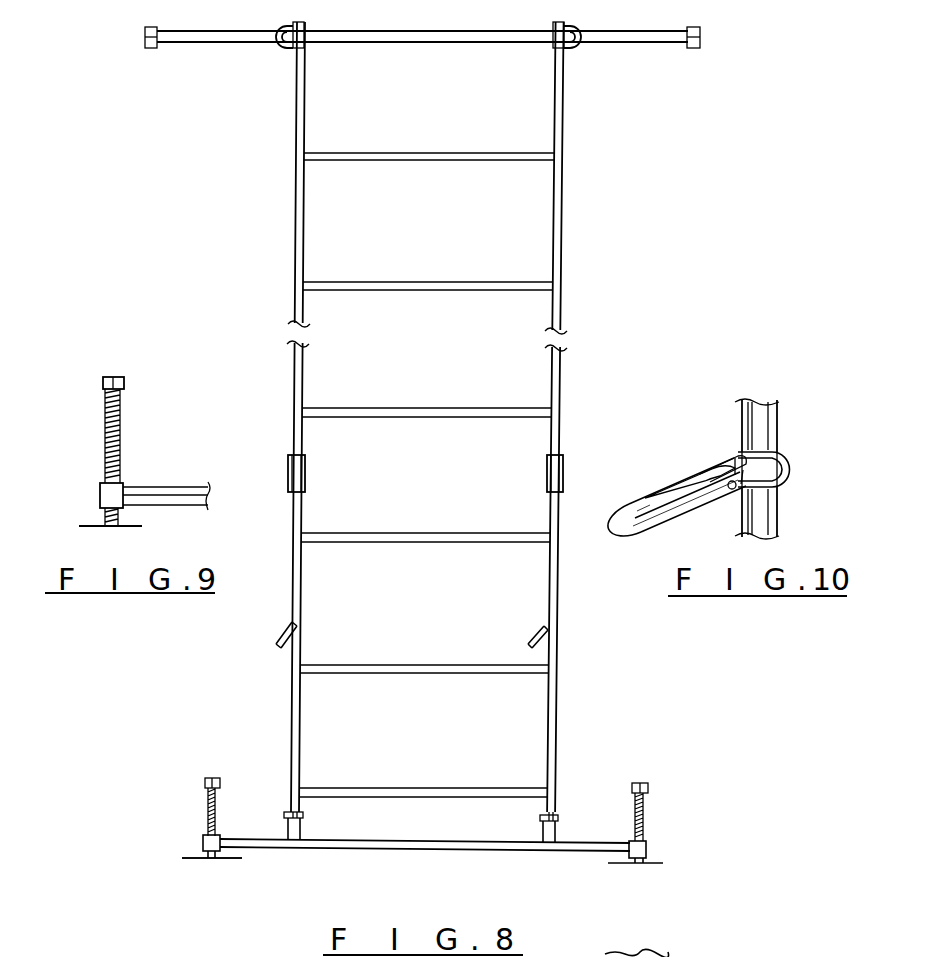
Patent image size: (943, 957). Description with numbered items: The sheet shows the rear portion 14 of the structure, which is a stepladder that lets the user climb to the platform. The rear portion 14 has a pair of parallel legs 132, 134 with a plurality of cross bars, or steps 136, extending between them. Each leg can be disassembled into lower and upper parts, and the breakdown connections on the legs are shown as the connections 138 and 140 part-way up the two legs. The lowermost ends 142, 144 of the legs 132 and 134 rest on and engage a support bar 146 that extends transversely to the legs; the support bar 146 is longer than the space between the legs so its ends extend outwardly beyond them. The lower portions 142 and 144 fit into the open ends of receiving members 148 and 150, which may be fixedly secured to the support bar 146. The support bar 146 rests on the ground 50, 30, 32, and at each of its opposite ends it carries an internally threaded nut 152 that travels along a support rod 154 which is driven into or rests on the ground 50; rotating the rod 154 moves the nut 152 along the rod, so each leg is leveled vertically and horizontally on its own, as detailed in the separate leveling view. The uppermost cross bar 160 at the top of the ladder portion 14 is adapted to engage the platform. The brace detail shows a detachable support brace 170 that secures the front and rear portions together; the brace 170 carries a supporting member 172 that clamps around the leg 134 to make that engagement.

In FIG. 8, the rear portion 14 is at (434, 417).
In FIG. 8, the ground surface 30 is at (678, 945).
In FIG. 8, the floor surface 32 is at (680, 955).
In FIG. 8, the ground 50 is at (224, 860).
In FIG. 8, the leg 132 is at (292, 236).
In FIG. 8, the leg 134 is at (562, 268).
In FIG. 10, the leg 134 is at (779, 516).
In FIG. 8, the cross bars 136 is at (447, 160).
In FIG. 8, the breakdown connection 138 is at (305, 470).
In FIG. 8, the breakdown connection 140 is at (564, 470).
In FIG. 8, the lowermost end 142 is at (292, 806).
In FIG. 8, the lowermost end 144 is at (552, 799).
In FIG. 8, the support bar 146 is at (453, 852).
In FIG. 9, the support bar 146 is at (182, 508).
In FIG. 8, the receiving member 148 is at (303, 831).
In FIG. 8, the receiving member 150 is at (556, 831).
In FIG. 9, the internally threaded nut 152 is at (100, 498).
In FIG. 9, the support rod 154 is at (120, 419).
In FIG. 8, the uppermost cross bar 160 is at (441, 44).
In FIG. 10, the support brace 170 is at (661, 479).
In FIG. 10, the supporting member 172 is at (782, 461).